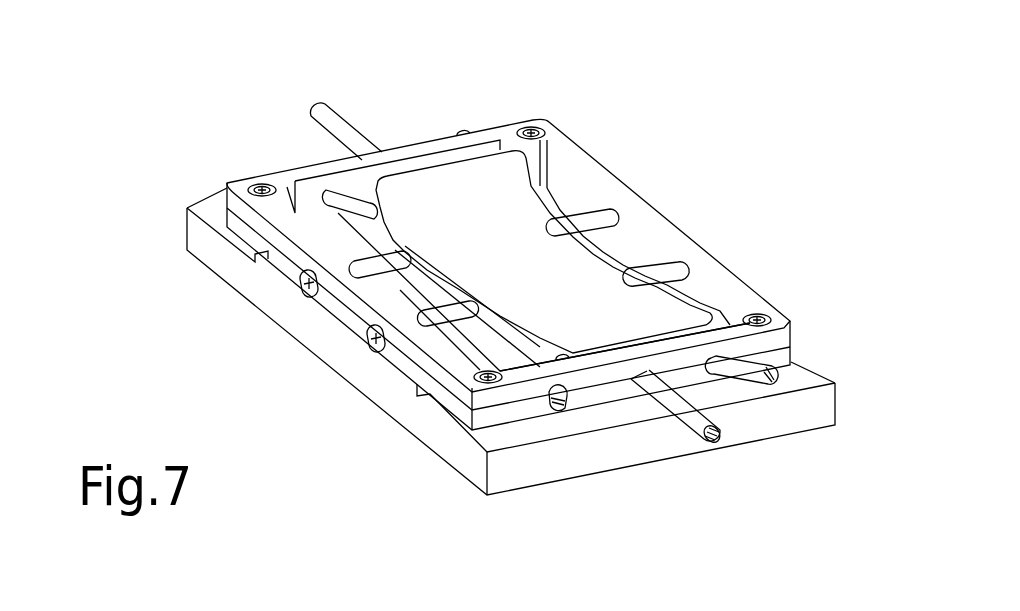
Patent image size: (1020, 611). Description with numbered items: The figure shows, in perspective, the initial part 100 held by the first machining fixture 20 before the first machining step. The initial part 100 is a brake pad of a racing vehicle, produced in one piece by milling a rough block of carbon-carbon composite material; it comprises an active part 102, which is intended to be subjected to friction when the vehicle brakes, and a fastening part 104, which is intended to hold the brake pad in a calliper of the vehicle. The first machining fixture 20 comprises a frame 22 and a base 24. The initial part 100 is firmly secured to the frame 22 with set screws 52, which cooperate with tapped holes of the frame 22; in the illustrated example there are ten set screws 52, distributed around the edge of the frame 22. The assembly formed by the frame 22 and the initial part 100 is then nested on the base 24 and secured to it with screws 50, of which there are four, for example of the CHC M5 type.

The first machining fixture 20 is at (429, 307).
The frame 22 is at (245, 223).
The base 24 is at (232, 267).
The screws 50 is at (263, 182).
The set screws 52 is at (333, 123).
The initial part 100 is at (540, 199).
The active part 102 is at (672, 305).
The fastening part 104 is at (530, 355).